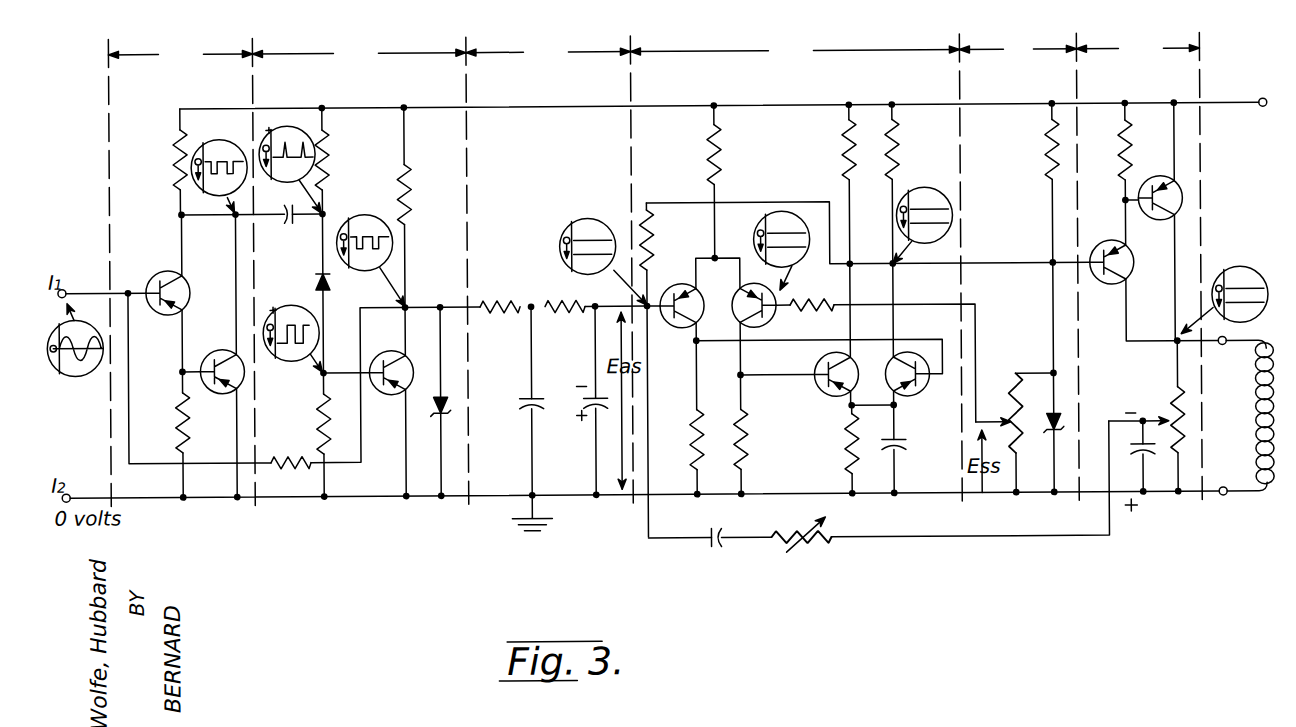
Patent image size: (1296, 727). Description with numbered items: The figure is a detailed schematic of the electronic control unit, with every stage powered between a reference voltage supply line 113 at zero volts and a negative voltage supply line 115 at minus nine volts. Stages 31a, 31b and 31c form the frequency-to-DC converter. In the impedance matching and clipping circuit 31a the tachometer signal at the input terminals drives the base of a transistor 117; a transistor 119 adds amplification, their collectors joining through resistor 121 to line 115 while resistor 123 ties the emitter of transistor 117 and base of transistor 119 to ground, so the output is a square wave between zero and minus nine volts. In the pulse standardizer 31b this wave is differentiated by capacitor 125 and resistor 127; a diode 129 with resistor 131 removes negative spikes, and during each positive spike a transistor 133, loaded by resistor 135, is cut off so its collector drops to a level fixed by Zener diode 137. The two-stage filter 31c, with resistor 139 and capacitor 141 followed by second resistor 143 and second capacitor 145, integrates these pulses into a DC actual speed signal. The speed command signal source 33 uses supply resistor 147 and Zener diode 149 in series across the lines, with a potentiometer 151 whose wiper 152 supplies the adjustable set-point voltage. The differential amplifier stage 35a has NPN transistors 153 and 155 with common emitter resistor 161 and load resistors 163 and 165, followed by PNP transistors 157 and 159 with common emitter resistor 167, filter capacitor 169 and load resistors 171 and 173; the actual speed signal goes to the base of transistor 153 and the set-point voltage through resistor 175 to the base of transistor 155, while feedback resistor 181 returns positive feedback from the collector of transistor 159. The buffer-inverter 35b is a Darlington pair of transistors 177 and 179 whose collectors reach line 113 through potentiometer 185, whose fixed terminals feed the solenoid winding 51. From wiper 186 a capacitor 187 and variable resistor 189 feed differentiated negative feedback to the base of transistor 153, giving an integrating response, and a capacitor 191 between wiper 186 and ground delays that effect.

The impedance matching and clipping circuit 31a is at (180, 53).
The pulse standardizer 31b is at (359, 52).
The two-stage filter 31c is at (548, 51).
The differential amplifier stage 35a is at (794, 50).
The speed command signal source 33 is at (1017, 48).
The buffer-inverter 35b is at (1137, 48).
The solenoid winding 51 is at (1255, 432).
The reference voltage supply line 113 is at (296, 498).
The negative voltage supply line 115 is at (314, 106).
The transistor 117 is at (163, 272).
The transistor 119 is at (222, 347).
The resistor 121 is at (179, 176).
The resistor 123 is at (182, 420).
The capacitor 125 is at (280, 220).
The resistor 127 is at (327, 152).
The diode 129 is at (317, 282).
The resistor 131 is at (319, 408).
The transistor 133 is at (385, 392).
The resistor 135 is at (410, 197).
The Zener diode 137 is at (433, 420).
The resistor 139 is at (486, 312).
The capacitor 141 is at (528, 412).
The second resistor 143 is at (560, 302).
The second capacitor 145 is at (585, 400).
The supply resistor 147 is at (1048, 148).
The Zener diode 149 is at (1062, 414).
The potentiometer 151 is at (1025, 388).
The wiper 152 is at (1003, 418).
The NPN transistor 153 is at (676, 329).
The NPN transistor 155 is at (755, 330).
The PNP transistor 157 is at (822, 390).
The PNP transistor 159 is at (903, 396).
The common emitter resistor 161 is at (710, 150).
The load resistor 163 is at (692, 432).
The load resistor 165 is at (745, 425).
The common emitter resistor 167 is at (848, 455).
The filter capacitor 169 is at (898, 450).
The load resistor 171 is at (845, 152).
The load resistor 173 is at (896, 148).
The resistor 175 is at (814, 290).
The transistor 177 is at (1100, 248).
The transistor 179 is at (1178, 192).
The feedback resistor 181 is at (643, 225).
The potentiometer 185 is at (1130, 160).
The wiper 186 is at (1160, 420).
The capacitor 187 is at (707, 548).
The variable resistor 189 is at (820, 540).
The capacitor 191 is at (1148, 462).